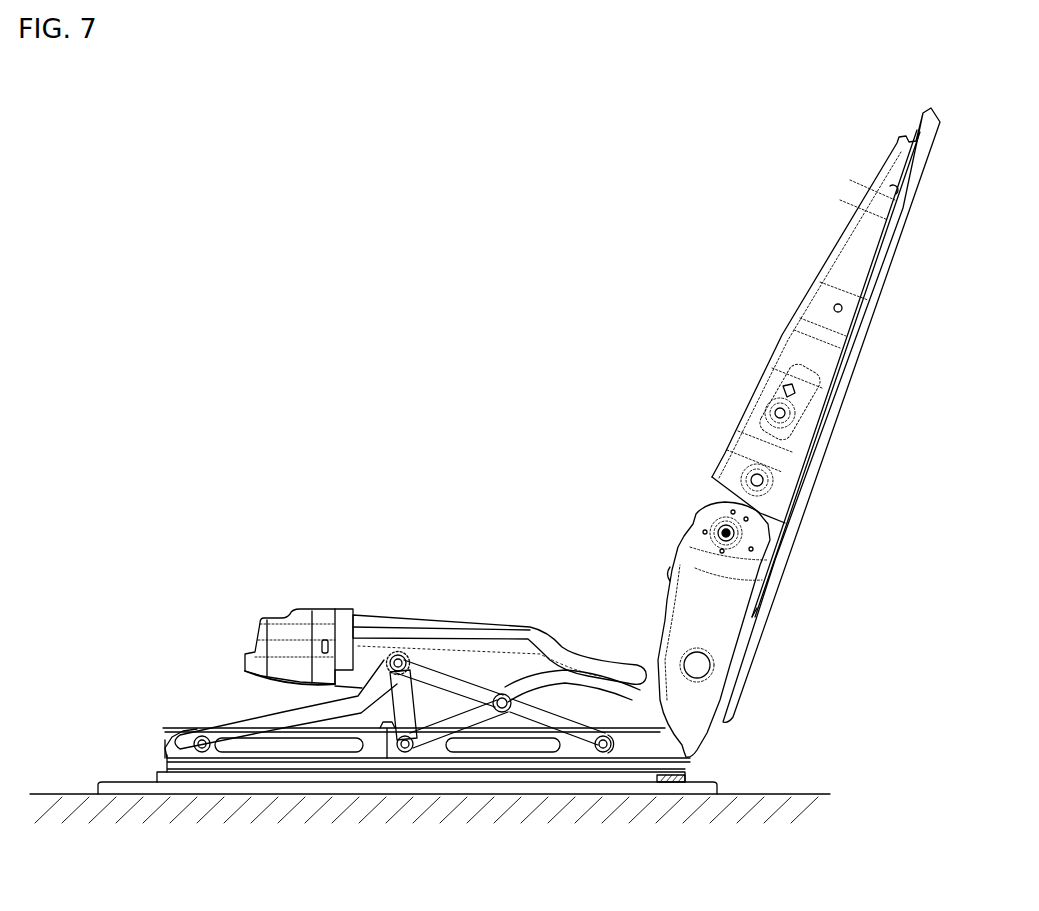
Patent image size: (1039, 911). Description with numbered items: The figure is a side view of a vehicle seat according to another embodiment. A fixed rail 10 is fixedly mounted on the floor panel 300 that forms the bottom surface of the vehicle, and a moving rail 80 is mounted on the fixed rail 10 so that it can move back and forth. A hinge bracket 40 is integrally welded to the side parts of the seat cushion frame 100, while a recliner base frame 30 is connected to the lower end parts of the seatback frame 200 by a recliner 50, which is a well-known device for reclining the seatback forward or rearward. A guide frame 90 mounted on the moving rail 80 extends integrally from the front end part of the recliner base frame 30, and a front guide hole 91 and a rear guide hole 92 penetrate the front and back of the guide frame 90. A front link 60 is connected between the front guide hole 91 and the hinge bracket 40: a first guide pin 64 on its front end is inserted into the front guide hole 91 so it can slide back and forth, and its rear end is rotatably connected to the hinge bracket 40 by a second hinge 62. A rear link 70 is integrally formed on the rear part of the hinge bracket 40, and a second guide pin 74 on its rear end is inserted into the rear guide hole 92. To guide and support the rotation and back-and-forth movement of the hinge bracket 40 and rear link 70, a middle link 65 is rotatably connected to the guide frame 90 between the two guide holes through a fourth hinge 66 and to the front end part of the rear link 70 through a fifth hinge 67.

The fixed rail 10 is at (315, 782).
The recliner base frame 30 is at (685, 742).
The hinge bracket 40 is at (478, 660).
The recliner 50 is at (732, 534).
The front link 60 is at (310, 718).
The second hinge 62 is at (392, 655).
The first guide pin 64 is at (193, 744).
The middle link 65 is at (505, 694).
The fourth hinge 66 is at (463, 718).
The fifth hinge 67 is at (563, 677).
The rear link 70 is at (541, 712).
The second guide pin 74 is at (603, 752).
The moving rail 80 is at (423, 765).
The guide frame 90 is at (368, 766).
The front guide hole 91 is at (262, 752).
The rear guide hole 92 is at (498, 746).
The seat cushion frame 100 is at (258, 598).
The seatback frame 200 is at (770, 325).
The floor panel 300 is at (808, 794).